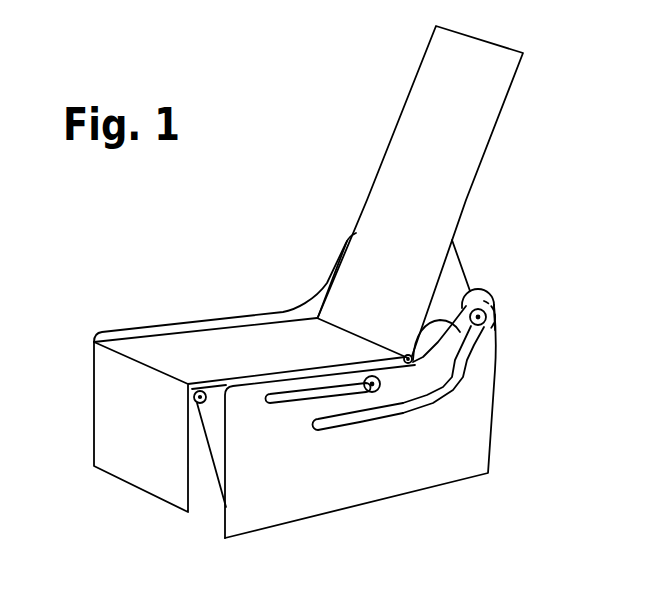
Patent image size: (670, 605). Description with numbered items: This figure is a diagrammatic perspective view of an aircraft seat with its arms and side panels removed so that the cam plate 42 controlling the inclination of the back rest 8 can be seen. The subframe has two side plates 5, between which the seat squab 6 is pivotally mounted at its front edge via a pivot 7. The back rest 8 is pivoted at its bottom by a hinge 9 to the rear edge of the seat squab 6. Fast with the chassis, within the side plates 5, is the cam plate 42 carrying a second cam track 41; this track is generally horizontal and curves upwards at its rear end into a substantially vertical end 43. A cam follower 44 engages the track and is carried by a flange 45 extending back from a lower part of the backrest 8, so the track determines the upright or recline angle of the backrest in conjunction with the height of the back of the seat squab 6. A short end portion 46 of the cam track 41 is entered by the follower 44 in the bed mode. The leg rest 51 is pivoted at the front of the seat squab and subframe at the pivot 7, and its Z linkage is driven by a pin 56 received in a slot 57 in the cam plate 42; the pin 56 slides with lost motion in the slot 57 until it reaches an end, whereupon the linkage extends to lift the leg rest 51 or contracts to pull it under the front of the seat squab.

The side plate 5 is at (215, 438).
The seat squab 6 is at (208, 343).
The pivot 7 is at (192, 400).
The back rest 8 is at (433, 135).
The hinge 9 is at (405, 352).
The second cam track 41 is at (459, 392).
The cam plate 42 is at (451, 443).
The vertical end 43 is at (494, 343).
The cam follower 44 is at (486, 313).
The flange 45 is at (453, 278).
The short end portion 46 is at (363, 425).
The leg rest 51 is at (130, 462).
The pin 56 is at (378, 389).
The slot 57 is at (286, 406).